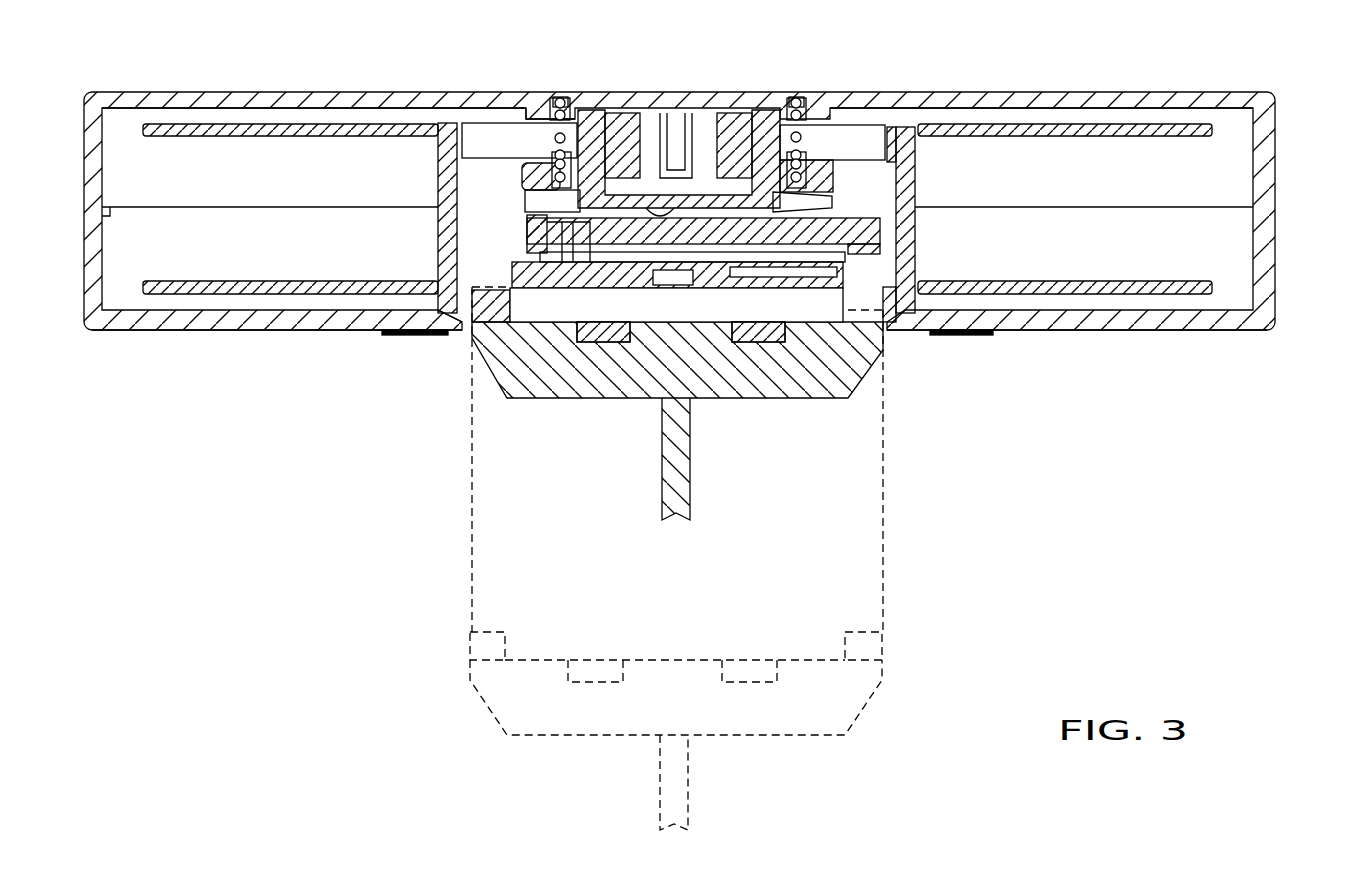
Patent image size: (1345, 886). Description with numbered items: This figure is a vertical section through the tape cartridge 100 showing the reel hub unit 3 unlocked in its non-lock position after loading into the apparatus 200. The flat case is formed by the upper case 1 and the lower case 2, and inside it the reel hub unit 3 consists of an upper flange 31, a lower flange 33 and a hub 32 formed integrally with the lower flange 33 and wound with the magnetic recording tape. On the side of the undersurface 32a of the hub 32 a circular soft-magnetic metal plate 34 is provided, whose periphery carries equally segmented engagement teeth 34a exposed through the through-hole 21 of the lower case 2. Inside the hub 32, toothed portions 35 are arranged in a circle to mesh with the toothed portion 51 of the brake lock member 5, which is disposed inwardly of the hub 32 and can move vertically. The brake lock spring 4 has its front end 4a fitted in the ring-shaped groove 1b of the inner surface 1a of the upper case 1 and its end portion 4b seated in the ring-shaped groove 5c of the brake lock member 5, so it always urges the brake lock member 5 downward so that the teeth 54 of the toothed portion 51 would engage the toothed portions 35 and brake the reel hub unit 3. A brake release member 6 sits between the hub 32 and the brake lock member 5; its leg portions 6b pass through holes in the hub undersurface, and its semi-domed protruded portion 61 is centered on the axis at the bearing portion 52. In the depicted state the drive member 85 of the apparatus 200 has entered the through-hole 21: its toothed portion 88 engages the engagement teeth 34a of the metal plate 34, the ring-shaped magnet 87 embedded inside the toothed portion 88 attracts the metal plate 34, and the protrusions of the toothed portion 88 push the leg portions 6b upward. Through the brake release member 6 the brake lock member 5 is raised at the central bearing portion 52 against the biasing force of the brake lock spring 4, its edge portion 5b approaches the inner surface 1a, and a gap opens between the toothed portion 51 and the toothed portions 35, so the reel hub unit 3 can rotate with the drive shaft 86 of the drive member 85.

The upper case 1 is at (1278, 112).
The inner surface of the upper case 1a is at (960, 110).
The ring-shaped groove of the upper case 1b is at (538, 102).
The lower case 2 is at (1226, 334).
The through-hole of the lower case 21 is at (457, 328).
The reel hub unit 3 is at (677, 217).
The upper flange 31 is at (1130, 125).
The hub 32 is at (900, 238).
The undersurface of the hub 32a is at (850, 314).
The lower flange 33 is at (1165, 296).
The metal plate 34 is at (805, 296).
The engagement teeth 34a is at (478, 345).
The toothed portions of the hub 35 is at (545, 232).
The brake lock spring 4 is at (553, 148).
The front end of the brake lock spring 4a is at (562, 100).
The end portion of the brake lock spring 4b is at (527, 196).
The brake lock member 5 is at (782, 132).
The edge portion 5b is at (772, 108).
The ring-shaped groove of the brake lock member 5c is at (800, 168).
The toothed portion of the brake lock member 51 is at (836, 198).
The bearing portion 52 is at (656, 206).
The teeth of the toothed portion 54 is at (600, 210).
The brake release member 6 is at (855, 240).
The leg portions 6b is at (882, 272).
The protruded portion 61 is at (690, 206).
The drive member 85 is at (876, 340).
The drive shaft 86 is at (692, 490).
The ring-shaped magnet 87 is at (600, 345).
The toothed portion of the drive member 88 is at (850, 300).
The tape cartridge 100 is at (708, 421).
The apparatus 200 is at (674, 558).